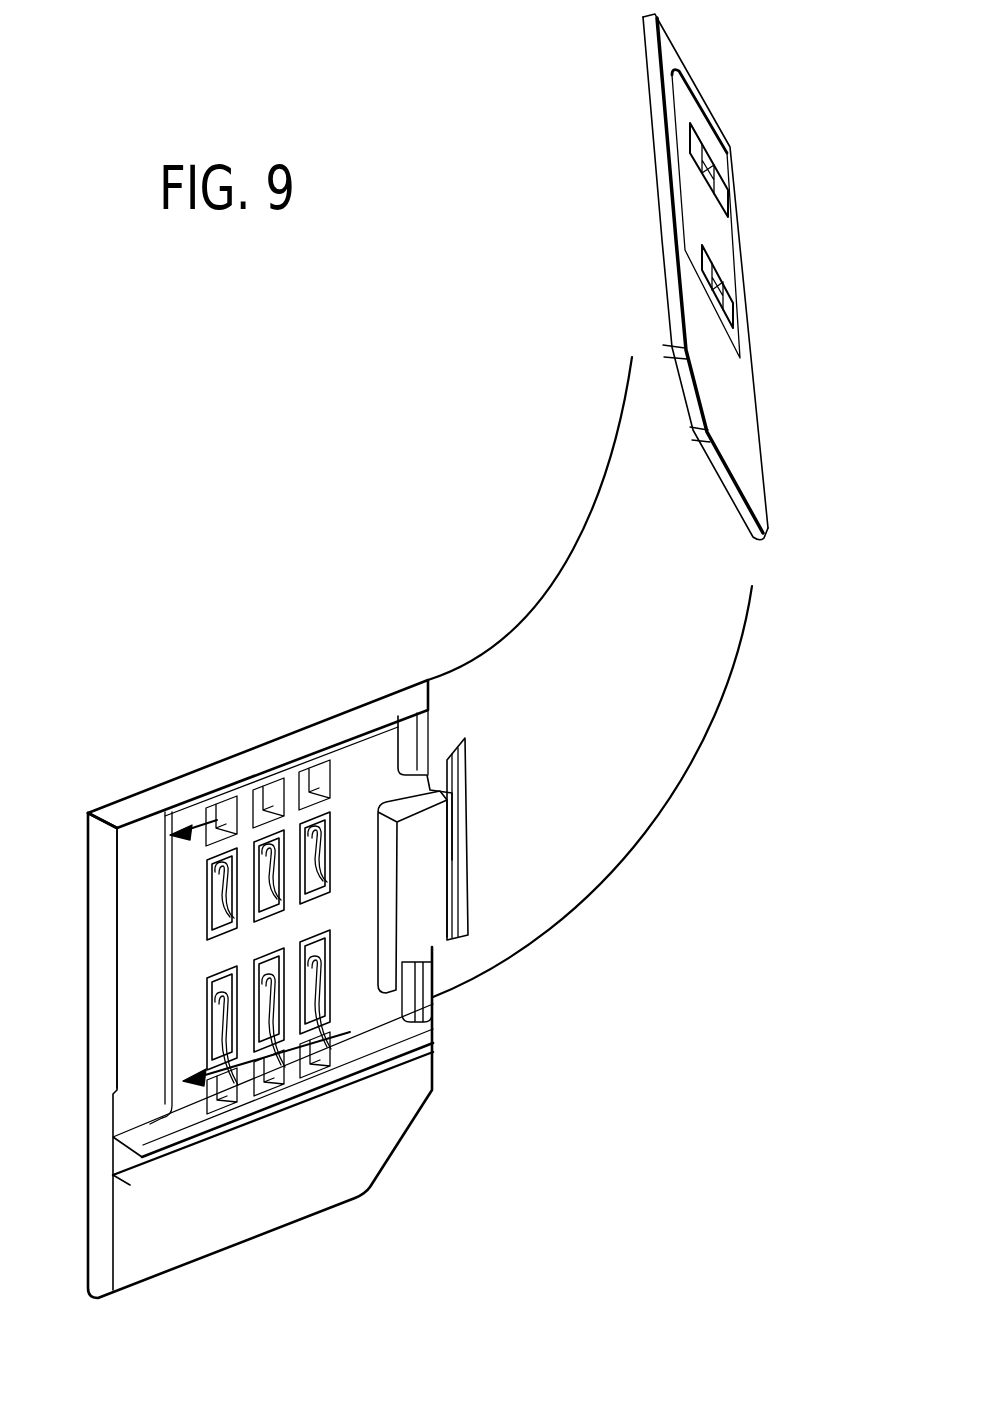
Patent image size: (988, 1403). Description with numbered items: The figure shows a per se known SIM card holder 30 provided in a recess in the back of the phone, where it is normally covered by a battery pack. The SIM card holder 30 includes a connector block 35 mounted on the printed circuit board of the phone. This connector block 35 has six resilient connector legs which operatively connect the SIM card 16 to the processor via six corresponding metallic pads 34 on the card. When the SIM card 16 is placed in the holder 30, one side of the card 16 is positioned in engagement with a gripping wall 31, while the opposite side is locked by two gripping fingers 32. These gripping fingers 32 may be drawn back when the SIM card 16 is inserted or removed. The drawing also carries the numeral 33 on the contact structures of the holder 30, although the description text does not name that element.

The SIM card 16 is at (750, 448).
The SIM card holder 30 is at (189, 777).
The gripping wall 31 is at (130, 990).
The gripping fingers 32 is at (420, 967).
The contact springs 33 is at (212, 1020).
The metallic pads 34 is at (735, 312).
The connector block 35 is at (433, 1037).